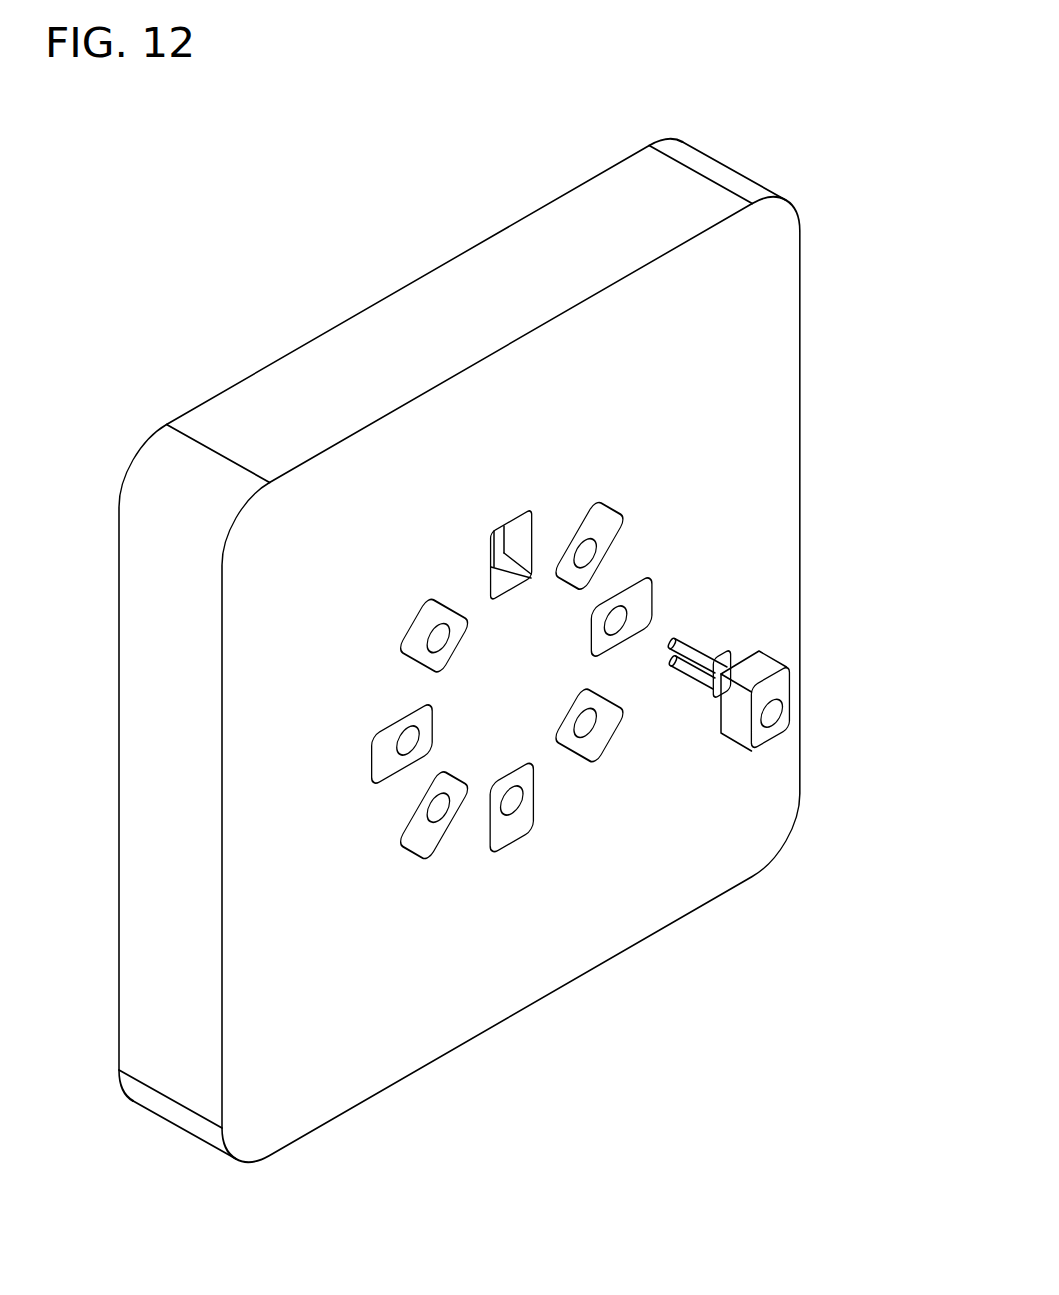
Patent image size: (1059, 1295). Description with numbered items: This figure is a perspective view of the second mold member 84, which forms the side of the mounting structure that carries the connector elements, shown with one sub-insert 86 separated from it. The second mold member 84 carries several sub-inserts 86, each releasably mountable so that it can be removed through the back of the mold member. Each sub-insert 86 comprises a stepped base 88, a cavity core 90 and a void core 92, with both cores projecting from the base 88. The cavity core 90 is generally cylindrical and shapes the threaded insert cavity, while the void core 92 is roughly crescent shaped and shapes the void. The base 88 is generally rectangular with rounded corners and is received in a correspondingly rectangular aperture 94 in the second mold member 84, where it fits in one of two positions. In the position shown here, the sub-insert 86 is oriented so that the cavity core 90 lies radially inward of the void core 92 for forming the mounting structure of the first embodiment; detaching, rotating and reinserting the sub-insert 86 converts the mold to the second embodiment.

The second mold member 84 is at (470, 296).
The sub-insert 86 is at (608, 534).
The stepped base 88 is at (744, 720).
The cavity core 90 is at (695, 672).
The void core 92 is at (702, 656).
The aperture 94 is at (522, 556).